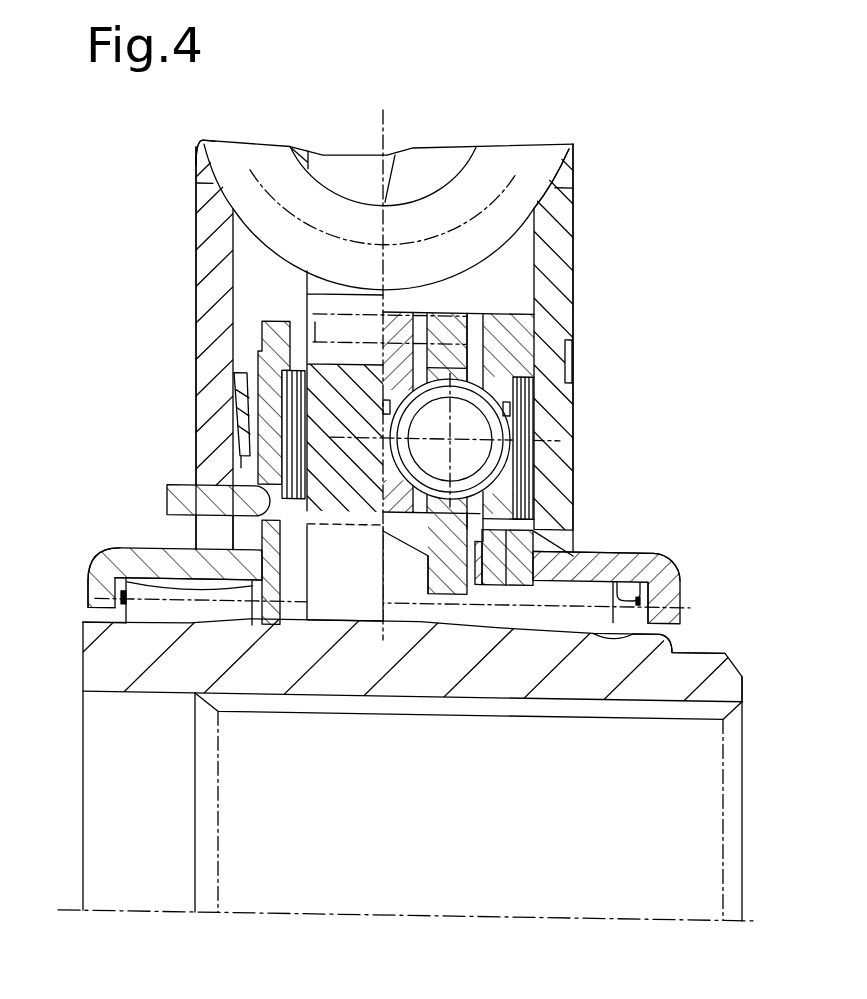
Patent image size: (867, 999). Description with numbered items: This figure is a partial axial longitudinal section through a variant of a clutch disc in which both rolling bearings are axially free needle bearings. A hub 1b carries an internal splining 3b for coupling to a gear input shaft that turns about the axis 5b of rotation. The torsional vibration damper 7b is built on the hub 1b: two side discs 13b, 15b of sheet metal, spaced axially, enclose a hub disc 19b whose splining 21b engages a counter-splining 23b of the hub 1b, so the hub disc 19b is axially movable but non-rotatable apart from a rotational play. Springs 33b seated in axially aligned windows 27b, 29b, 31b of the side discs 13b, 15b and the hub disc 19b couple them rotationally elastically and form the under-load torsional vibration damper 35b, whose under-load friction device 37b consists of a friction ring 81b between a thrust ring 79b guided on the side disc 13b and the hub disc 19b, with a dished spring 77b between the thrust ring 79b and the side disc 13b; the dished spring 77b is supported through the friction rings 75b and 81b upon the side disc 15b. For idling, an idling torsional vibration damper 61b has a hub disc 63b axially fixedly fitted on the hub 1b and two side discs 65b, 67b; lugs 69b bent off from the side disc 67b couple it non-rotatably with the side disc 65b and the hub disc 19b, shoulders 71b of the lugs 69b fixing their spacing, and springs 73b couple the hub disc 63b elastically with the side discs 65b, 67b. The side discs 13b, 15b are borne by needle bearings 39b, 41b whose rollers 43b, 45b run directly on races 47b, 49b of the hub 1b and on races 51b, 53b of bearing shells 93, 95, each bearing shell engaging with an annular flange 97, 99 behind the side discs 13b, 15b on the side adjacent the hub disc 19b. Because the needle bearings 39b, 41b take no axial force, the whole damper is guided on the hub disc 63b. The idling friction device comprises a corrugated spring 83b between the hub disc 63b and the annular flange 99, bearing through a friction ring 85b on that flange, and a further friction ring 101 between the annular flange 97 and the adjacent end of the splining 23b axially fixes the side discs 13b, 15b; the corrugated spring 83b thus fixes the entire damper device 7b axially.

The hub 1b is at (320, 701).
The internal splining 3b is at (391, 707).
The axis of rotation 5b is at (307, 912).
The torsional vibration damper 7b is at (540, 128).
The side disc 13b is at (214, 243).
The side disc 15b is at (570, 277).
The hub disc 19b is at (337, 367).
The splining 21b is at (355, 598).
The counter-splining 23b is at (282, 626).
The window 27b is at (205, 179).
The window 29b is at (568, 170).
The window 31b is at (343, 168).
The spring 33b is at (200, 152).
The under-load torsional vibration damper 35b is at (595, 192).
The under-load friction device 37b is at (190, 331).
The needle bearing 39b is at (92, 552).
The needle bearing 41b is at (690, 560).
The rollers 43b is at (115, 607).
The rollers 45b is at (672, 601).
The race 47b is at (100, 628).
The race 49b is at (672, 645).
The race 51b is at (189, 500).
The race 53b is at (670, 572).
The idling torsional vibration damper 61b is at (592, 392).
The hub disc 63b is at (433, 595).
The side disc 65b is at (398, 310).
The side disc 67b is at (540, 341).
The lugs 69b is at (415, 311).
The shoulders 71b is at (479, 311).
The springs 73b is at (536, 446).
The friction ring 75b is at (536, 491).
The dished spring 77b is at (250, 390).
The thrust ring 79b is at (281, 404).
The friction ring 81b is at (236, 449).
The corrugated spring 83b is at (478, 587).
The friction ring 85b is at (497, 590).
The bearing shell 93 is at (140, 559).
The bearing shell 95 is at (643, 553).
The annular flange 97 is at (240, 540).
The annular flange 99 is at (556, 540).
The further friction ring 101 is at (88, 586).